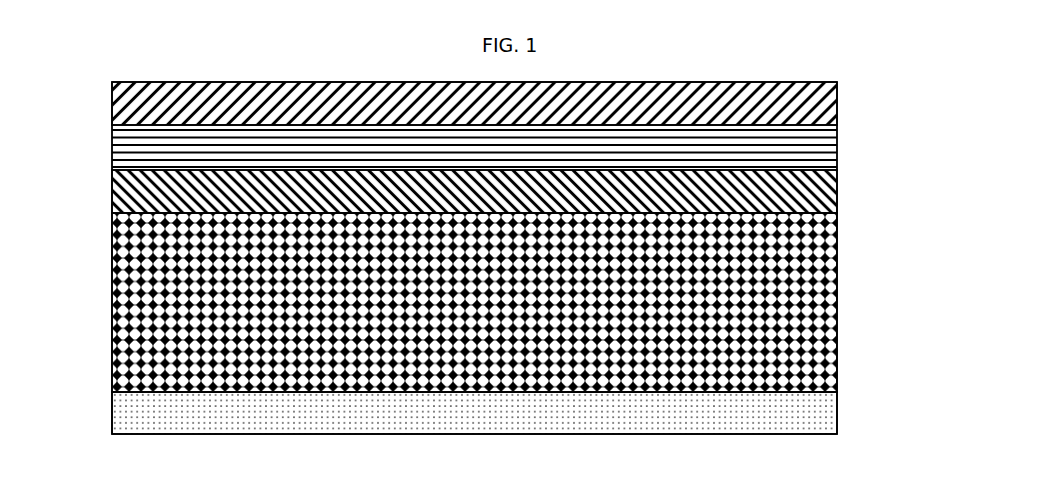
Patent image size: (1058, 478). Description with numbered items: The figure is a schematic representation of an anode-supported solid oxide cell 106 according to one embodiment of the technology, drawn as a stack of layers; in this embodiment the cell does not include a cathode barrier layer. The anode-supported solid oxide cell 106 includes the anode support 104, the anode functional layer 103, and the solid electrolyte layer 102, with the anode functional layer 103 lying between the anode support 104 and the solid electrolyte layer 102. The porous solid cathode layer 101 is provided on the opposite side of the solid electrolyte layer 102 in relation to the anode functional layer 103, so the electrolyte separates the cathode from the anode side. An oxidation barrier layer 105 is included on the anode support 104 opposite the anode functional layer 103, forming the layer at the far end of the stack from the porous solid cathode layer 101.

The porous solid cathode layer 101 is at (837, 105).
The solid electrolyte layer 102 is at (837, 148).
The anode functional layer (AFL) 103 is at (838, 195).
The anode support (AS) 104 is at (838, 302).
The oxidation barrier layer (OBL) 105 is at (838, 412).
The anode-supported solid oxide cell 106 is at (105, 72).